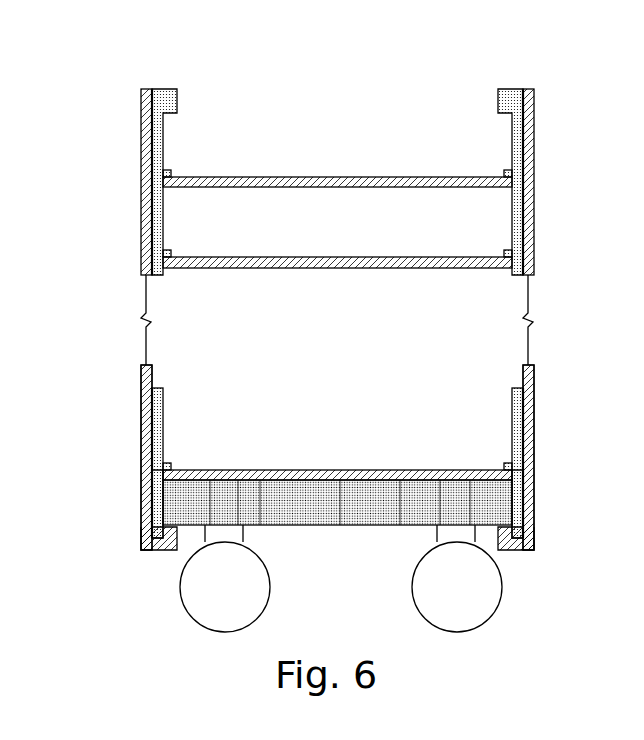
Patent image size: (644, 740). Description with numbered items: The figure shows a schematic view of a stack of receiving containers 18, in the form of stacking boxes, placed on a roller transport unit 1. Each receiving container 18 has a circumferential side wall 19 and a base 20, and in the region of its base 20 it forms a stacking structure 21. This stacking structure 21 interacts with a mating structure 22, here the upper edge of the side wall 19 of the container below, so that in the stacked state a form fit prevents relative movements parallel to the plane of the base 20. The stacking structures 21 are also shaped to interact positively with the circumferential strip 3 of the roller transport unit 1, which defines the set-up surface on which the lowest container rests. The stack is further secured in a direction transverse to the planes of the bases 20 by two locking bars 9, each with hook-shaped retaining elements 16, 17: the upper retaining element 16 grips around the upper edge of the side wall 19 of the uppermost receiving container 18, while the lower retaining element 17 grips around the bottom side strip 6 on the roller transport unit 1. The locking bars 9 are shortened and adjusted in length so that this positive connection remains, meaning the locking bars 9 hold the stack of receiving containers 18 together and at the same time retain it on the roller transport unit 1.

The roller transport unit 1 is at (327, 518).
The circumferential strip 3 is at (141, 481).
The bottom side strip 6 is at (141, 531).
The locking bar 9 is at (351, 319).
The hook-shaped retaining element 16 is at (170, 90).
The hook-shaped retaining element 17 is at (162, 551).
The receiving container 18 is at (288, 166).
The circumferential side wall 19 is at (530, 114).
The base 20 is at (213, 177).
The stacking structure 21 is at (146, 276).
The mating structure 22 is at (156, 388).